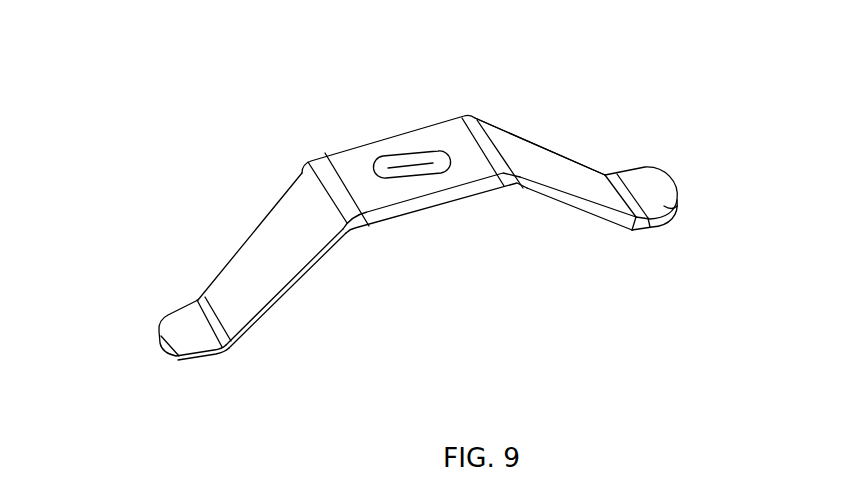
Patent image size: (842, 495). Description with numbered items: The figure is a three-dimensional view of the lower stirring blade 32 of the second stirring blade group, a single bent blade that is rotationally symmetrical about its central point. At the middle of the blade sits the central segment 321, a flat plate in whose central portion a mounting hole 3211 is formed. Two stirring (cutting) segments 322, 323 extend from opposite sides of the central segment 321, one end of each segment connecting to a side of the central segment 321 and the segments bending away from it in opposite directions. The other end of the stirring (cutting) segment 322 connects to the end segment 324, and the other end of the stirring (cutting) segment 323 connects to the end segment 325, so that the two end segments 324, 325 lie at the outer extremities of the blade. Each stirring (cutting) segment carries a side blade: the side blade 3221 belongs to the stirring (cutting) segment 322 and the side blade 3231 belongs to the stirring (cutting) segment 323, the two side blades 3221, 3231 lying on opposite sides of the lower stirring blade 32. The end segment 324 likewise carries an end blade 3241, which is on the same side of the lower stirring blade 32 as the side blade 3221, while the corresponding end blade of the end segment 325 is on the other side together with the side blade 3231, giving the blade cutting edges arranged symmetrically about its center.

The lower stirring blade 32 is at (597, 337).
The central segment 321 is at (388, 145).
The mounting hole 3211 is at (422, 157).
The stirring (cutting) segment 322 is at (247, 268).
The side blade 3221 is at (283, 295).
The end segment 324 is at (173, 328).
The end blade 3241 is at (208, 352).
The stirring (cutting) segment 323 is at (567, 193).
The side blade 3231 is at (567, 160).
The end segment 325 is at (668, 217).